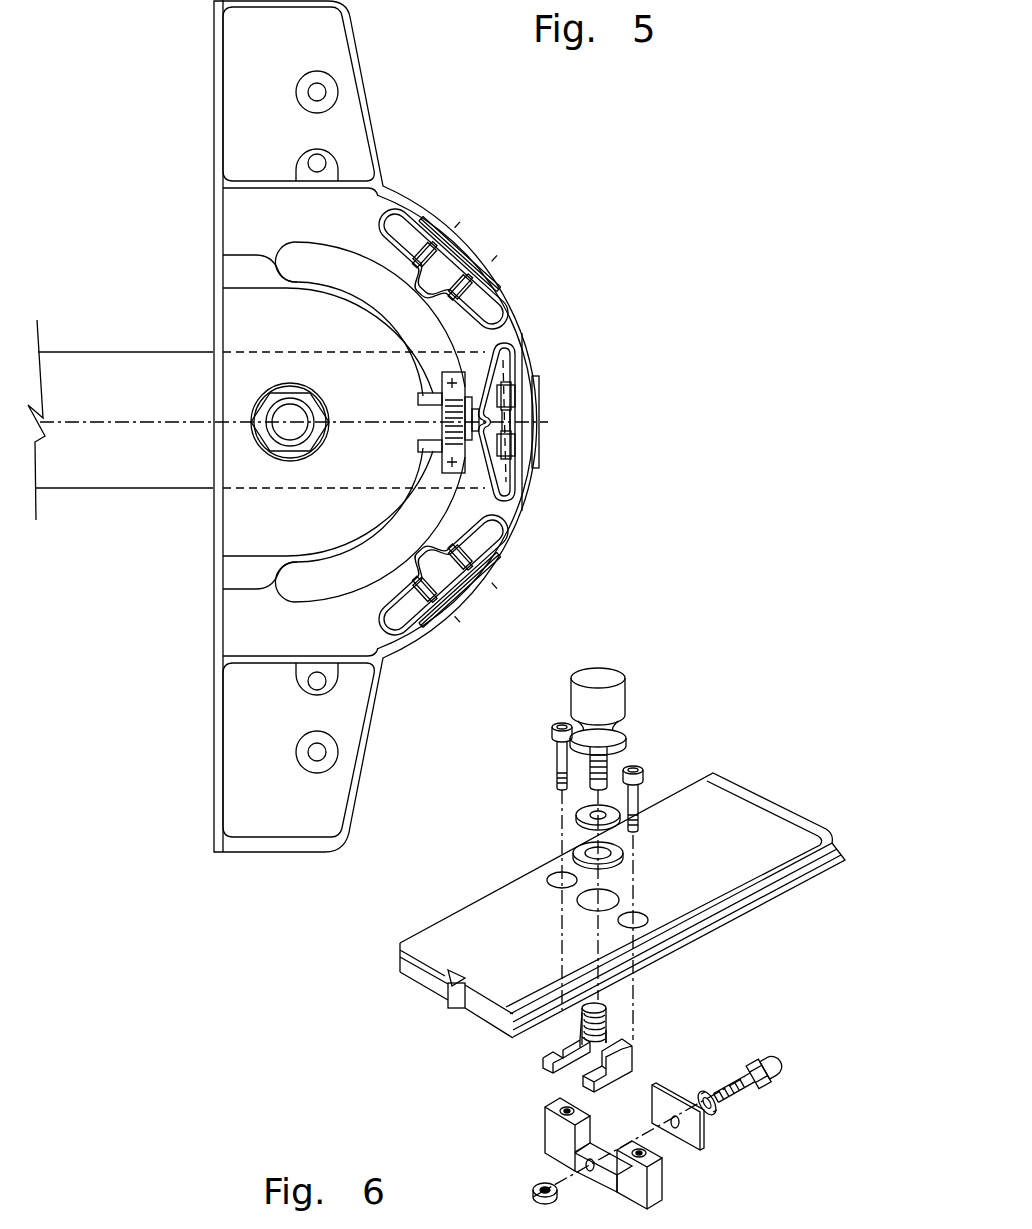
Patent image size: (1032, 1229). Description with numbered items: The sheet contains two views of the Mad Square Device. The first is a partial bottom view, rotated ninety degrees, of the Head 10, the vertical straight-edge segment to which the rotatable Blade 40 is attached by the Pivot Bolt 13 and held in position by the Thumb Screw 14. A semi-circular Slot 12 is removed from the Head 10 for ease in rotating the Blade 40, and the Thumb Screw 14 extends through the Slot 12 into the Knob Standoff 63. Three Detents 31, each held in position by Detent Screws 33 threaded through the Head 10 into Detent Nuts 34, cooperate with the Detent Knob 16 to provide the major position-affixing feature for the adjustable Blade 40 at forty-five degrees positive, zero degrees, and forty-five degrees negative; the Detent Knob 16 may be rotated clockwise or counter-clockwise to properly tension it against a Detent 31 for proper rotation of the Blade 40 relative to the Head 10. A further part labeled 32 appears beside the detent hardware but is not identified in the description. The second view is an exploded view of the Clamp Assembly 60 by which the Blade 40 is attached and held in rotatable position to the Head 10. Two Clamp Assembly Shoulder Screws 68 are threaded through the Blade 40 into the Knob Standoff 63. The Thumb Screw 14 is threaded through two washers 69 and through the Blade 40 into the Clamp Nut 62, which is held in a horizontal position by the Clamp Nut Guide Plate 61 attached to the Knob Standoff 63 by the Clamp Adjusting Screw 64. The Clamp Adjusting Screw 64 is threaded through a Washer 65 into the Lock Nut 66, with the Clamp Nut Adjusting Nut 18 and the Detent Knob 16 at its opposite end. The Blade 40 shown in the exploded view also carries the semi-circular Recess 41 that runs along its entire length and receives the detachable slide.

In FIG. 5, the head 10 is at (374, 720).
In FIG. 5, the semi-circular slot 12 is at (327, 431).
In FIG. 5, the pivot bolt 13 is at (438, 518).
In FIG. 6, the thumb screw 14 is at (630, 692).
In FIG. 5, the detent knob 16 is at (496, 444).
In FIG. 6, the detent knob 16 is at (785, 1082).
In FIG. 6, the clamp nut adjusting nut 18 is at (772, 1098).
In FIG. 5, the detent 31 is at (494, 296).
In FIG. 5, the strip 32 is at (478, 247).
In FIG. 5, the detent screw 33 is at (428, 240).
In FIG. 5, the detent nut 34 is at (414, 240).
In FIG. 6, the blade 40 is at (822, 822).
In FIG. 6, the recess 41 is at (507, 1024).
In FIG. 6, the clamp assembly 60 is at (612, 1030).
In FIG. 6, the clamp nut guide plate 61 is at (712, 1135).
In FIG. 6, the clamp nut 62 is at (540, 1062).
In FIG. 6, the knob standoff 63 is at (542, 1130).
In FIG. 6, the clamp adjusting screw 64 is at (737, 1080).
In FIG. 6, the washer 65 is at (707, 1088).
In FIG. 6, the lock nut 66 is at (528, 1190).
In FIG. 6, the clamp assembly shoulder screw 68 is at (570, 757).
In FIG. 6, the washer 69 is at (574, 818).